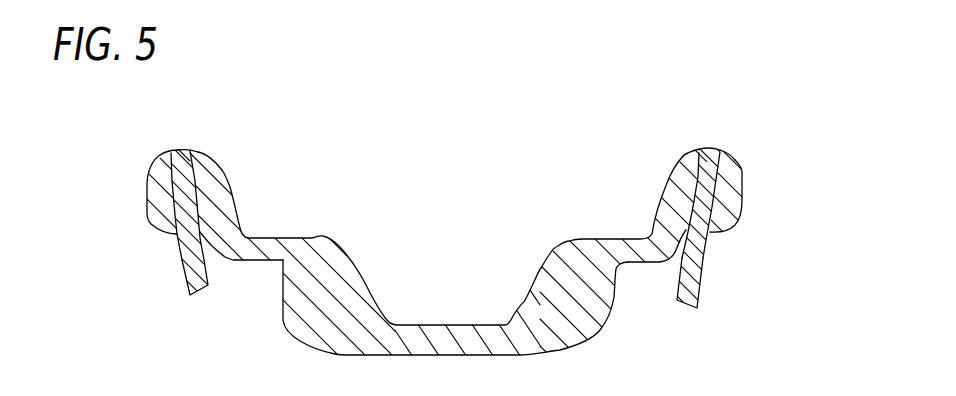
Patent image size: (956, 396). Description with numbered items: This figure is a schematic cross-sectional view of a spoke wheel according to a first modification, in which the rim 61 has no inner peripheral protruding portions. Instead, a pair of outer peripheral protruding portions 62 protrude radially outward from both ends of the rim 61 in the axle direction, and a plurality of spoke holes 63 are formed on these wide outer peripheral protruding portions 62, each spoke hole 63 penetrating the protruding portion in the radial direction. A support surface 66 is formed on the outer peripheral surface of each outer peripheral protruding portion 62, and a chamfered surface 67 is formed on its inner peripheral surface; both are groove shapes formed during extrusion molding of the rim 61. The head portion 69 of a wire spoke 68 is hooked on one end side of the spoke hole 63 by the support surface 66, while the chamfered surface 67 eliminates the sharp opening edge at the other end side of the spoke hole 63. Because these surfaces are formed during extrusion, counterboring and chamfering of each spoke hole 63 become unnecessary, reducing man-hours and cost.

The rim 61 is at (456, 277).
The outer peripheral protruding portion 62 is at (147, 183).
The spoke hole 63 is at (182, 194).
The support surface 66 is at (170, 148).
The chamfered surface 67 is at (178, 237).
The wire spoke 68 is at (208, 270).
The head portion 69 is at (185, 151).